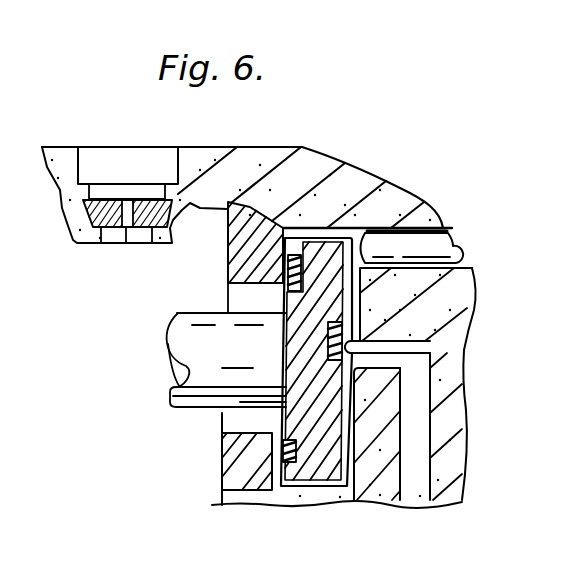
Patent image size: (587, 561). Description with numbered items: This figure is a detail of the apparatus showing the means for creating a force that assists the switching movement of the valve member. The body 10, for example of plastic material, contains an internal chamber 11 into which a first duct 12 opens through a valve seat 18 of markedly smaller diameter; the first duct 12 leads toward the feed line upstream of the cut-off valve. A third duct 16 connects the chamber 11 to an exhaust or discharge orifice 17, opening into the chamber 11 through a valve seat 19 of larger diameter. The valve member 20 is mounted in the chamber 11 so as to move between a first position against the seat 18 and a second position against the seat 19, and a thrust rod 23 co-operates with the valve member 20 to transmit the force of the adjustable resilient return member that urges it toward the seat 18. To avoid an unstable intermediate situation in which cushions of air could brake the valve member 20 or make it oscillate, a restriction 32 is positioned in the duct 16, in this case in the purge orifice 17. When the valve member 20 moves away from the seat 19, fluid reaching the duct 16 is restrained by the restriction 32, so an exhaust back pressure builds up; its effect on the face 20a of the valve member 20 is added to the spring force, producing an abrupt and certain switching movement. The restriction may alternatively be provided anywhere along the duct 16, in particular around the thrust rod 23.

The body 10 is at (217, 180).
The internal chamber 11 is at (303, 486).
The first duct 12 is at (420, 422).
The third duct 16 is at (230, 297).
The exhaust or discharge orifice 17 is at (136, 163).
The valve seat 18 is at (442, 331).
The valve seat 19 is at (313, 400).
The valve member 20 is at (223, 452).
The face of the valve member 20a is at (284, 416).
The thrust rod 23 is at (207, 360).
The restriction 32 is at (123, 232).